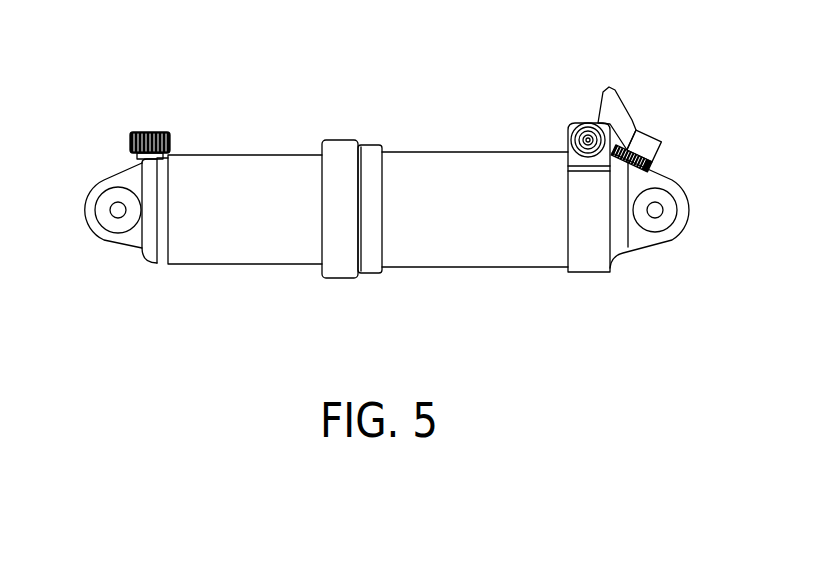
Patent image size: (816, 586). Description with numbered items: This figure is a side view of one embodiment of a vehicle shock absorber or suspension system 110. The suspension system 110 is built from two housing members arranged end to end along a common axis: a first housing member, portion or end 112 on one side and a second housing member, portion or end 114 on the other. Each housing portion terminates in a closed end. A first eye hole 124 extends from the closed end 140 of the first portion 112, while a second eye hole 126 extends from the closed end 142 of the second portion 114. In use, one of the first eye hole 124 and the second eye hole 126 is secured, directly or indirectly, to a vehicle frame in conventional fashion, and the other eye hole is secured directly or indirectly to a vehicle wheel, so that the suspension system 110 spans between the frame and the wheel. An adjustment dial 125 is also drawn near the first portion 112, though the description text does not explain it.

The suspension system 110 is at (394, 72).
The first housing portion 112 is at (498, 252).
The second housing portion 114 is at (245, 240).
The first eye hole 124 is at (660, 218).
The adjustment dial 125 is at (579, 127).
The second eye hole 126 is at (113, 222).
The closed end of first portion 140 is at (619, 281).
The closed end of second portion 142 is at (145, 276).